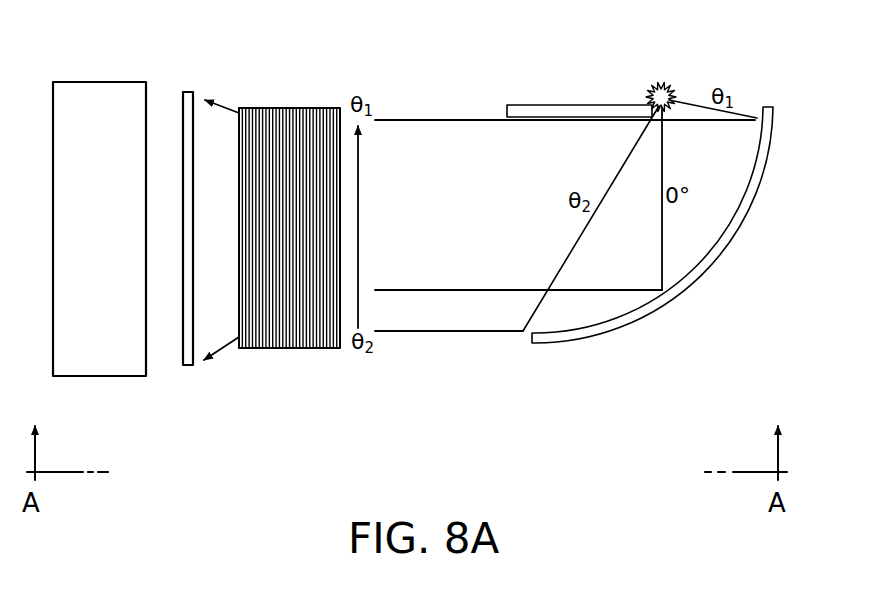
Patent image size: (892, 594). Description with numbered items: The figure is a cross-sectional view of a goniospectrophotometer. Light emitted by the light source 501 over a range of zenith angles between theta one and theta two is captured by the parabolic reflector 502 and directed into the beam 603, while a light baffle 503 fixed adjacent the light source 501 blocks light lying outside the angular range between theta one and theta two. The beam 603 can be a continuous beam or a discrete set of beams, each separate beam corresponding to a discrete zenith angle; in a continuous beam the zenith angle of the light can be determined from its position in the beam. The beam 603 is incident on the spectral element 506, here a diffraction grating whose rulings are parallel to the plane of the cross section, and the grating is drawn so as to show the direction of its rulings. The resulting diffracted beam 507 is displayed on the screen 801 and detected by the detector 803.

The detector 803 is at (93, 376).
The screen 801 is at (187, 365).
The diffracted beam 507 is at (206, 138).
The spectral element 506 is at (288, 348).
The beam 603 is at (393, 326).
The light baffle 503 is at (543, 104).
The light source 501 is at (655, 84).
The parabolic reflector 502 is at (646, 318).